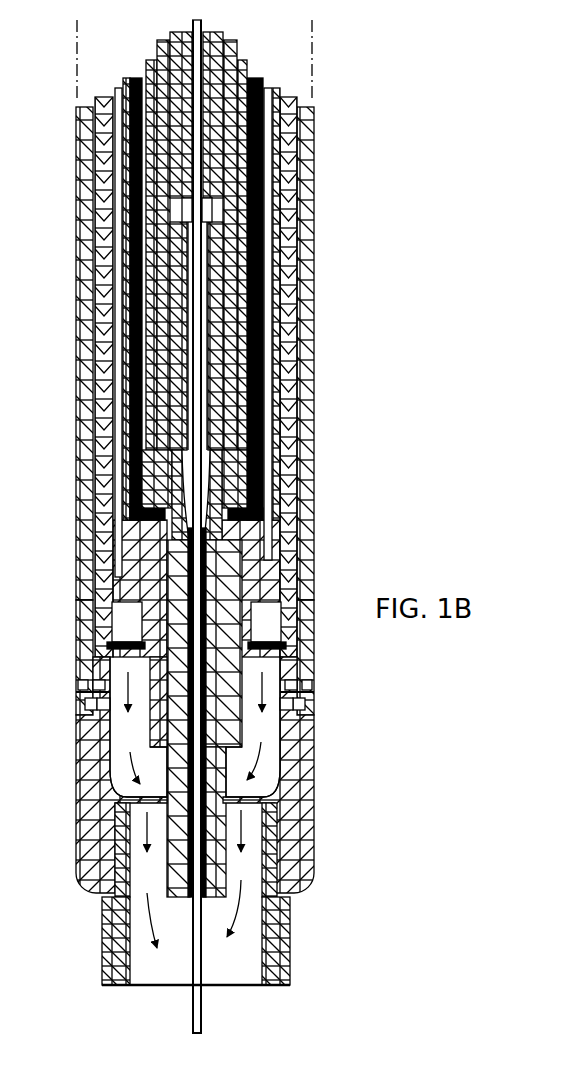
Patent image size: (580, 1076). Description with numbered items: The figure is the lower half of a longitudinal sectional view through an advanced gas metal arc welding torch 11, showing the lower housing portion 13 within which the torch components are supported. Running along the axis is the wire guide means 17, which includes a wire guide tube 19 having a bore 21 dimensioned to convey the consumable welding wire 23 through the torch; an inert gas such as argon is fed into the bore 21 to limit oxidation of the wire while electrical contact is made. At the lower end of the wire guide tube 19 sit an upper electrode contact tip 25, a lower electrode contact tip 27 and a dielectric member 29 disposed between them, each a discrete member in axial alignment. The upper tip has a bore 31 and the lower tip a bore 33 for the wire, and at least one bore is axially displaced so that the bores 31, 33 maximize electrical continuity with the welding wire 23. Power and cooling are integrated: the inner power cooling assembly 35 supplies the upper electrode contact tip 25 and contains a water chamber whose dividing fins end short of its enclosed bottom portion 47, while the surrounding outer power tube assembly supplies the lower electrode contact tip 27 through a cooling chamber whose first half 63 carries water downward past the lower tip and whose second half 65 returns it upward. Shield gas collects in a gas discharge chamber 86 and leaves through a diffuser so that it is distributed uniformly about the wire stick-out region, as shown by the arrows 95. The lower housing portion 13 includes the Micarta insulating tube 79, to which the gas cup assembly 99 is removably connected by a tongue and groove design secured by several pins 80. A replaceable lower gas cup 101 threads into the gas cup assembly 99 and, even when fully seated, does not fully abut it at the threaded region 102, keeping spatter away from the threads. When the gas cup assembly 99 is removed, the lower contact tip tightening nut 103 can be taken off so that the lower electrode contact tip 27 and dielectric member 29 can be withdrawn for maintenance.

The GMAW torch 11 is at (340, 246).
The lower housing portion 13 is at (315, 517).
The wire guide means 17 is at (212, 165).
The wire guide tube 19 is at (209, 31).
The bore 21 is at (192, 22).
The welding wire 23 is at (198, 1026).
The upper electrode contact tip 25 is at (213, 386).
The lower electrode contact tip 27 is at (218, 672).
The dielectric member 29 is at (218, 470).
The bore 31 is at (165, 385).
The bore 33 is at (208, 738).
The inner power cooling assembly 35 is at (168, 400).
The enclosed bottom portion 47 is at (155, 477).
The first half of chamber 63 is at (273, 561).
The second half of chamber 65 is at (120, 553).
The Micarta insulating tube 79 is at (305, 628).
The pins 80 is at (85, 695).
The gas discharge chamber 86 is at (127, 618).
The shield gas flow arrows 95 is at (240, 907).
The gas cup assembly 99 is at (310, 798).
The lower gas cup 101 is at (278, 962).
The threaded region 102 is at (272, 840).
The lower contact tip tightening nut 103 is at (157, 731).